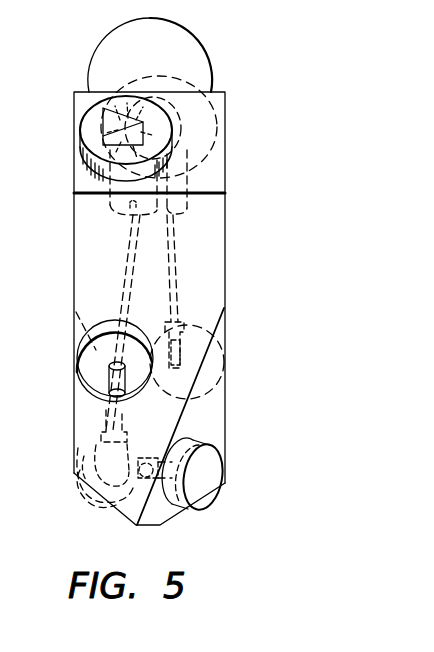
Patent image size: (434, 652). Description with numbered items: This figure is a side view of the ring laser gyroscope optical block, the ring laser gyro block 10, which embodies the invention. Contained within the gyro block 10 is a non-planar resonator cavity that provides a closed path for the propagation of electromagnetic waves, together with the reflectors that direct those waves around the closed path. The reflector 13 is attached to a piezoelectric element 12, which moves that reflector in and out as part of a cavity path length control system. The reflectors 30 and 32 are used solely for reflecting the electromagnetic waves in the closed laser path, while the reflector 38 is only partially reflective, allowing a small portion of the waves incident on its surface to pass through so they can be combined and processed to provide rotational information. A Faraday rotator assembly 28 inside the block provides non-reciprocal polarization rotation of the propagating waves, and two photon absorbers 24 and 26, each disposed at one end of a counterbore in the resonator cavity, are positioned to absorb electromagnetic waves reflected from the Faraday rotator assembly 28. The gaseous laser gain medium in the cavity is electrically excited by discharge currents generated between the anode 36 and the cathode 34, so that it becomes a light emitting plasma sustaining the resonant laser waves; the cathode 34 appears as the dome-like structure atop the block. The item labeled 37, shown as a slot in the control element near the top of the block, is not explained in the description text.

The ring laser gyro block 10 is at (236, 262).
The piezoelectric element 12 is at (222, 74).
The reflector 13 is at (226, 104).
The photon absorber 24 is at (100, 436).
The photon absorber 26 is at (222, 422).
The Faraday rotator assembly 28 is at (155, 458).
The reflector 30 is at (80, 485).
The reflector 32 is at (214, 472).
The cathode 34 is at (175, 30).
The anode 36 is at (102, 383).
The slot 37 is at (103, 118).
The reflector 38 is at (93, 128).